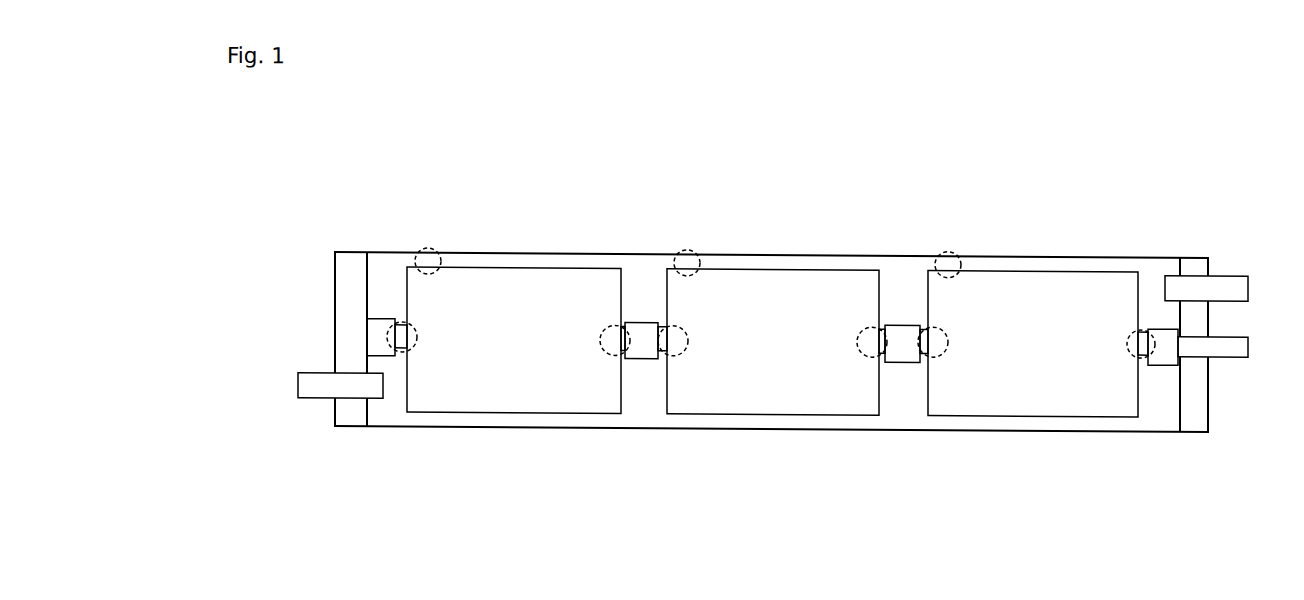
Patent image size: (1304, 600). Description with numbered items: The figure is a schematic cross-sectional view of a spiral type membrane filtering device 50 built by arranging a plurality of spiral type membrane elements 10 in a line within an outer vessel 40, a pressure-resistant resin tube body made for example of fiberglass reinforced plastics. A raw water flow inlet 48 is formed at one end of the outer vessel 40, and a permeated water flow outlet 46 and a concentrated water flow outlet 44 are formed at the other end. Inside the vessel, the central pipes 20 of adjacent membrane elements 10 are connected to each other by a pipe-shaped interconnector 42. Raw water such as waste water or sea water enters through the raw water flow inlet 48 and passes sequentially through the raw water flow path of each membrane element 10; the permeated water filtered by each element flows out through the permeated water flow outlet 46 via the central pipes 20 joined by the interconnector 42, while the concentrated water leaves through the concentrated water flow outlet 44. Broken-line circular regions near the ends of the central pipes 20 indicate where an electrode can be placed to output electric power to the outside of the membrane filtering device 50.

The spiral type membrane element 10 is at (538, 414).
The central pipe 20 is at (397, 325).
The outer vessel 40 is at (1158, 417).
The interconnector 42 is at (643, 342).
The concentrated water flow outlet 44 is at (1233, 271).
The permeated water flow outlet 46 is at (1227, 341).
The raw water flow inlet 48 is at (318, 375).
The spiral type membrane filtering device 50 is at (787, 217).